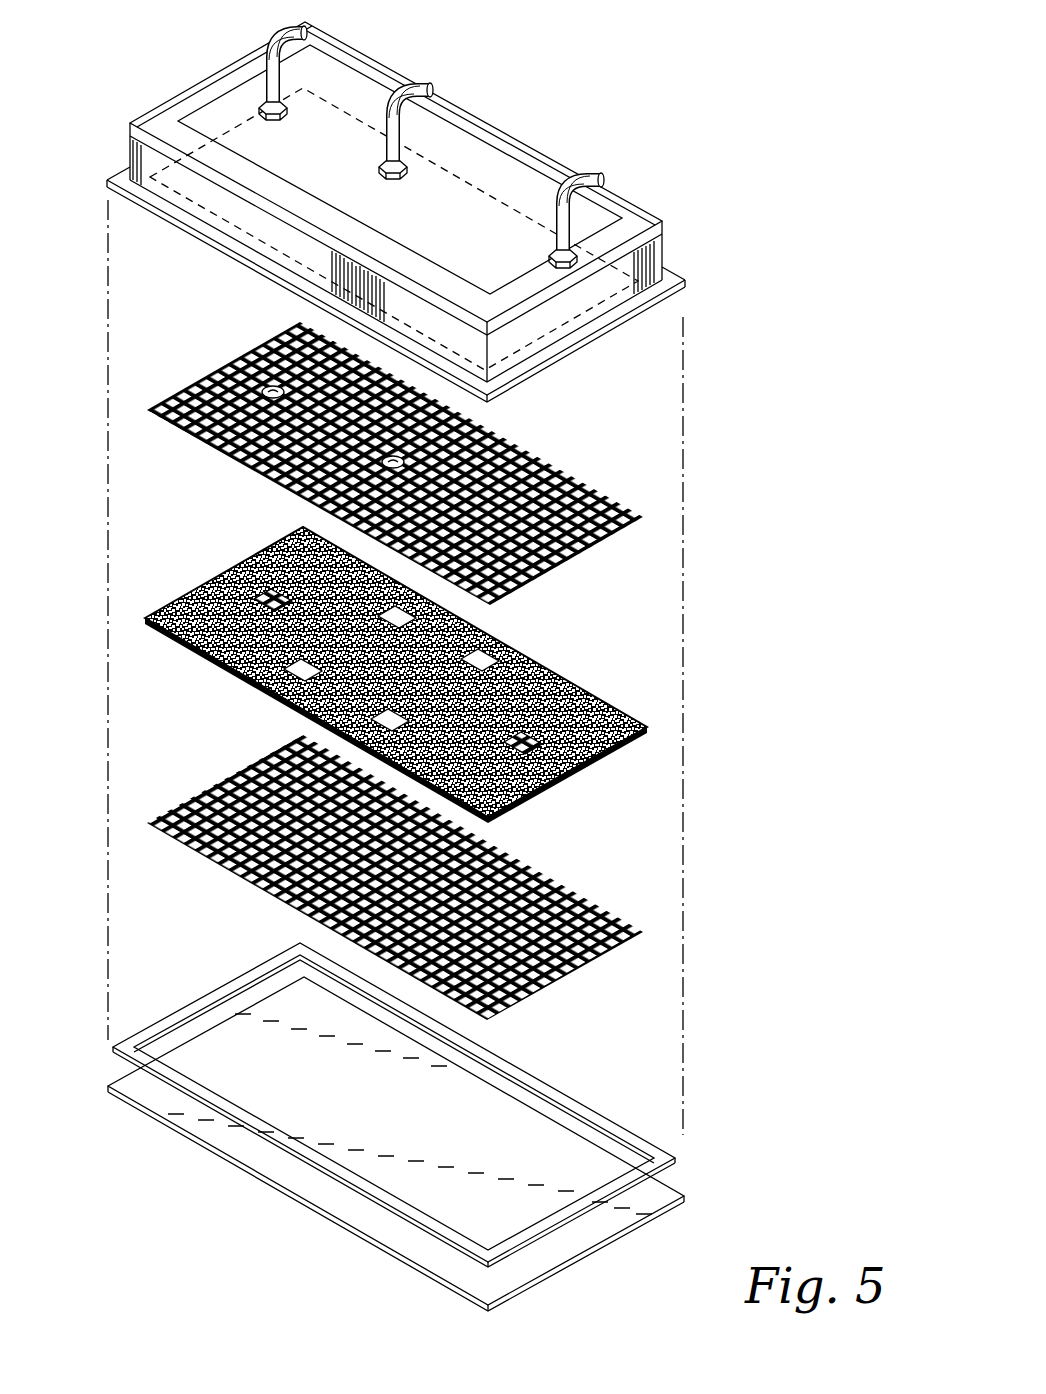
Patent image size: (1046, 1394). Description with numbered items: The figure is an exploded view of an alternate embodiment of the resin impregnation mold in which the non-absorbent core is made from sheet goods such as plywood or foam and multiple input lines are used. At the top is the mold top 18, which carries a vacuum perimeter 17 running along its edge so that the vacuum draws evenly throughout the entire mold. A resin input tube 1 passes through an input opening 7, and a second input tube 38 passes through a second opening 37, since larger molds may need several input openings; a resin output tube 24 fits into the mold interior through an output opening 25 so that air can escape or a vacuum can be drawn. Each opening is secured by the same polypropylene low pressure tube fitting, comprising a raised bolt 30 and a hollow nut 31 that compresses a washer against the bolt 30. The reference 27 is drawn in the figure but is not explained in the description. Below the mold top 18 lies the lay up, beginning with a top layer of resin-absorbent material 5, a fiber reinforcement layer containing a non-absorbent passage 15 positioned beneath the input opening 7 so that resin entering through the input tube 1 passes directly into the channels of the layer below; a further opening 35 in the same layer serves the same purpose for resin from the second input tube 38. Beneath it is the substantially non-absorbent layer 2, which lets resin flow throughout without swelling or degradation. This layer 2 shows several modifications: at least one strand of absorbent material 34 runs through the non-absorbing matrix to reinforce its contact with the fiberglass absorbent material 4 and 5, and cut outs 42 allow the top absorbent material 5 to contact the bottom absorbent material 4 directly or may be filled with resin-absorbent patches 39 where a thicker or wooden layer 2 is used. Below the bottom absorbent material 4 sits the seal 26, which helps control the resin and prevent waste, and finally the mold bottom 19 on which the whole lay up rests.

The resin input tube 1 is at (430, 80).
The non-absorbent layer 2 is at (583, 700).
The bottom absorbent material 4 is at (592, 908).
The resin-absorbent material 5 is at (590, 477).
The input opening 7 is at (410, 168).
The non-absorbent passage 15 is at (404, 461).
The vacuum perimeter 17 is at (222, 150).
The mold top 18 is at (662, 255).
The mold bottom 19 is at (133, 1107).
The resin output tube 24 is at (600, 156).
The output opening 25 is at (618, 222).
The seal 26 is at (580, 1094).
The inlet flow arrow 27 is at (260, 83).
The raised bolt 30 is at (616, 348).
The hollow nut 31 is at (433, 208).
The strand of absorbent material 34 is at (540, 788).
The opening 35 is at (273, 386).
The second opening 37 is at (281, 115).
The second input tube 38 is at (315, 27).
The resin-absorbent patches 39 is at (255, 560).
The cut outs 42 is at (490, 653).